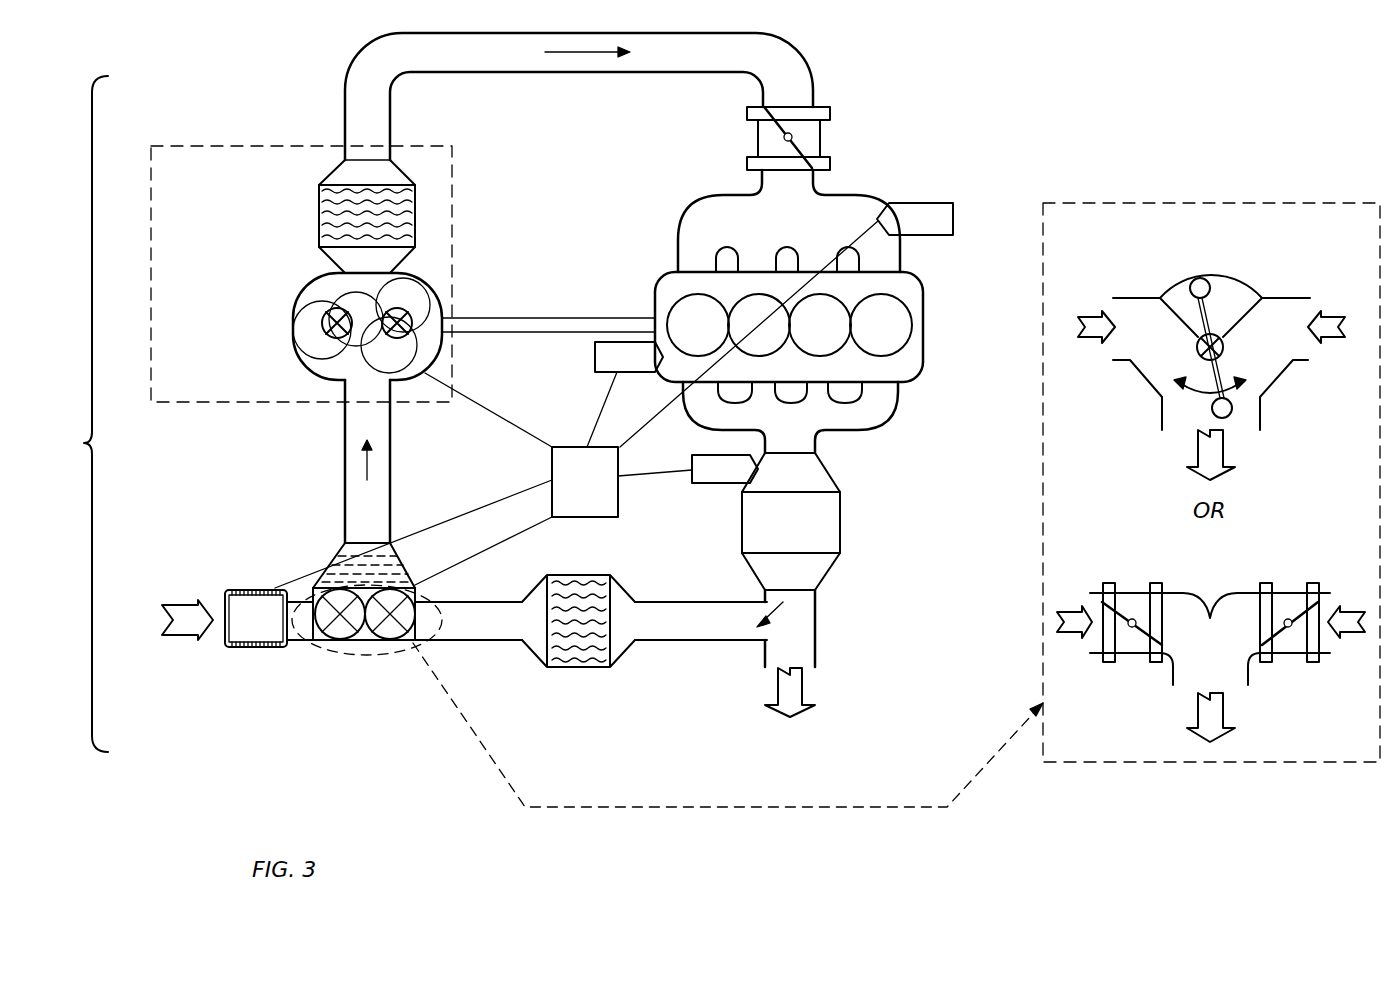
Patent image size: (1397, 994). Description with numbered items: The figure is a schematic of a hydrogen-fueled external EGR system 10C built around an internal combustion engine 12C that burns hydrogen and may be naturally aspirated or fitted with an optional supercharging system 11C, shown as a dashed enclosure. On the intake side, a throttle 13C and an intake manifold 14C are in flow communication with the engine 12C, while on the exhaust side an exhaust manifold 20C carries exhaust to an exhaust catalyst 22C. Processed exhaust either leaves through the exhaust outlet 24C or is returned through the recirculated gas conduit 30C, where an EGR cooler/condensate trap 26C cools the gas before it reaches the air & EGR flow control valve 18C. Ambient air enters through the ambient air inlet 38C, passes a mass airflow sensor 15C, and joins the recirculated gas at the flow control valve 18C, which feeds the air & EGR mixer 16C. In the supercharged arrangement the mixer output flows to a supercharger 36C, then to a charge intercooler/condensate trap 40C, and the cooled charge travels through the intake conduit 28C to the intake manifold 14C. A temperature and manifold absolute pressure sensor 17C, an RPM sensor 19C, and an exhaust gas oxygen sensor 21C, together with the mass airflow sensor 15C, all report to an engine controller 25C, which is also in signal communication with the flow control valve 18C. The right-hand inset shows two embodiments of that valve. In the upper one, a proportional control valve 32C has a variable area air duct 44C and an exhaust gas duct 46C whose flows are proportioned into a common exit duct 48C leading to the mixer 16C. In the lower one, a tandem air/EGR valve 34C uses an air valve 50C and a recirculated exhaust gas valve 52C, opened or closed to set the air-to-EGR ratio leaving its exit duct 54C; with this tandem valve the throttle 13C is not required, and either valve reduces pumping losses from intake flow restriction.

The external EGR system 10C is at (72, 414).
The supercharging system 11C is at (253, 145).
The internal combustion engine 12C is at (925, 334).
The throttle 13C is at (823, 143).
The intake manifold 14C is at (702, 203).
The mass airflow sensor 15C is at (263, 648).
The air & EGR mixer 16C is at (392, 545).
The temperature and manifold absolute pressure sensor 17C is at (942, 235).
The air & EGR flow control valve 18C is at (360, 655).
The RPM sensor 19C is at (592, 353).
The exhaust manifold 20C is at (892, 413).
The exhaust gas oxygen sensor 21C is at (722, 483).
The exhaust catalyst 22C is at (833, 533).
The exhaust outlet 24C is at (810, 657).
The engine controller 25C is at (580, 518).
The EGR cooler/condensate trap 26C is at (582, 666).
The intake conduit 28C is at (532, 33).
The recirculated gas conduit 30C is at (668, 640).
The proportional control valve 32C is at (1223, 275).
The tandem air/EGR valve 34C is at (1200, 593).
The supercharger 36C is at (297, 330).
The ambient air inlet 38C is at (217, 636).
The charge intercooler/condensate trap 40C is at (320, 200).
The variable area air duct 44C is at (1112, 350).
The exhaust gas duct 46C is at (1307, 350).
The exit duct 48C is at (1245, 422).
The air valve 50C is at (1133, 662).
The recirculated exhaust gas valve 52C is at (1288, 660).
The exit duct 54C is at (1230, 677).